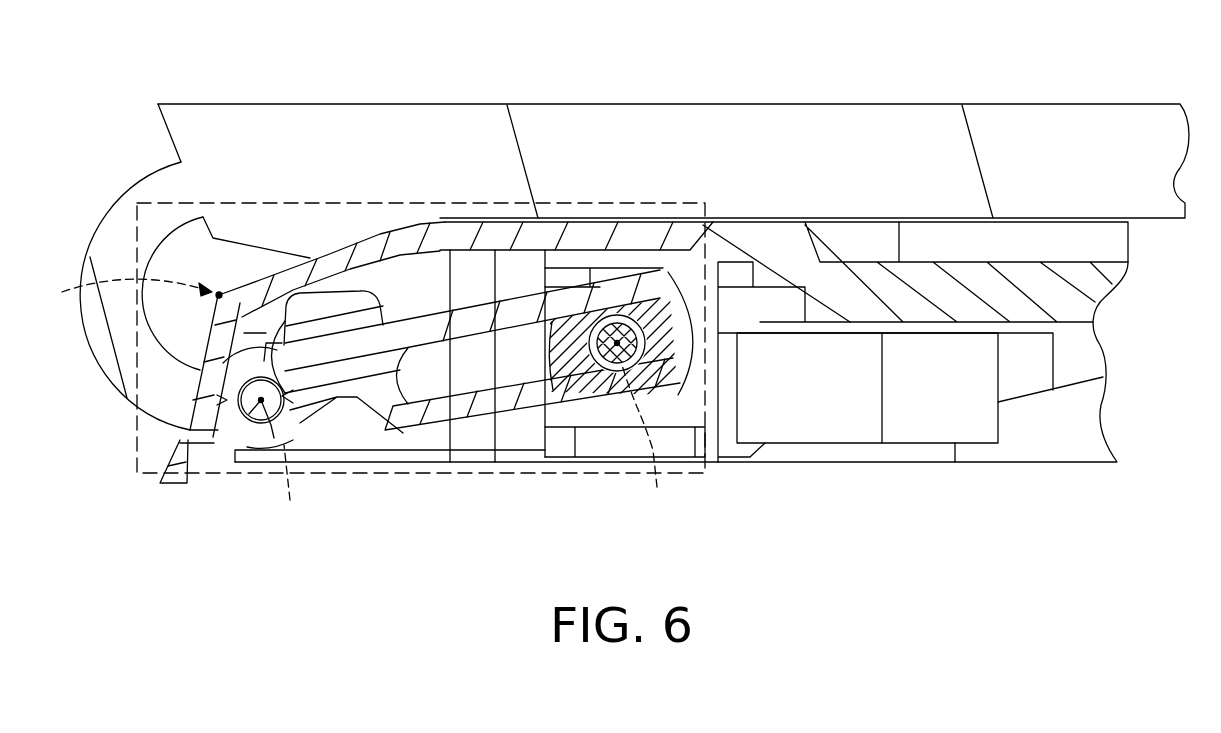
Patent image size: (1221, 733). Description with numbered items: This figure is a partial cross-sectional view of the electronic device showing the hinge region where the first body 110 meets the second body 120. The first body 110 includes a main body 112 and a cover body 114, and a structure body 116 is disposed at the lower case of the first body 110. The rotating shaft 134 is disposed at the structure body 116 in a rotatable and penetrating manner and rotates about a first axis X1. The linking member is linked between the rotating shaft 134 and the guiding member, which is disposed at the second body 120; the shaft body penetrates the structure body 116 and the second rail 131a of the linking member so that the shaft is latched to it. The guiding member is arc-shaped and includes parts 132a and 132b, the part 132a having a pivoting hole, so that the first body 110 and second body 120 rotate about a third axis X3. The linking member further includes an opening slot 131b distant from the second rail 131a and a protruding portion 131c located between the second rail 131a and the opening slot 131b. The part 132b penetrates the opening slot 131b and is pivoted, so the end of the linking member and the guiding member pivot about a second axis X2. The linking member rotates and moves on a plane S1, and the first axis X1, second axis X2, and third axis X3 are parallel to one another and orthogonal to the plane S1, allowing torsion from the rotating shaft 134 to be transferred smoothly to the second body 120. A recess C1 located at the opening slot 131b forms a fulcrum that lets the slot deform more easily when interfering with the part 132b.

The first body 110 is at (681, 234).
The main body 112 is at (768, 238).
The cover body 114 is at (649, 232).
The structure body 116 is at (803, 414).
The second body 120 is at (1035, 103).
The second rail 131a is at (432, 378).
The opening slot 131b is at (213, 397).
The protruding portion 131c is at (327, 308).
The part of guiding member 132a is at (117, 224).
The part of guiding member 132b is at (240, 422).
The rotating shaft 134 is at (573, 360).
The recess C1 is at (261, 398).
The plane S1 is at (227, 203).
The first axis X1 is at (646, 442).
The second axis X2 is at (290, 490).
The third axis X3 is at (126, 292).